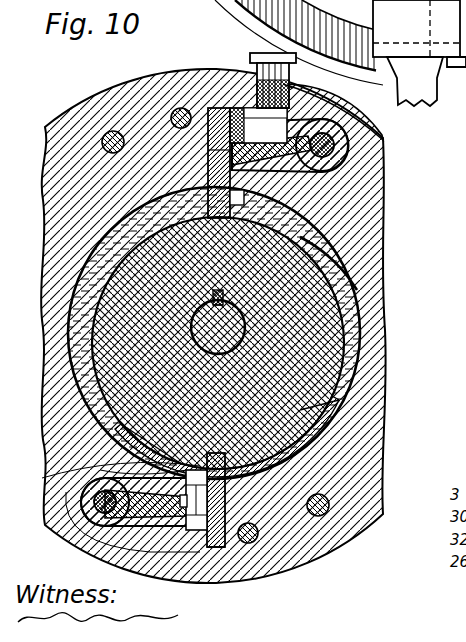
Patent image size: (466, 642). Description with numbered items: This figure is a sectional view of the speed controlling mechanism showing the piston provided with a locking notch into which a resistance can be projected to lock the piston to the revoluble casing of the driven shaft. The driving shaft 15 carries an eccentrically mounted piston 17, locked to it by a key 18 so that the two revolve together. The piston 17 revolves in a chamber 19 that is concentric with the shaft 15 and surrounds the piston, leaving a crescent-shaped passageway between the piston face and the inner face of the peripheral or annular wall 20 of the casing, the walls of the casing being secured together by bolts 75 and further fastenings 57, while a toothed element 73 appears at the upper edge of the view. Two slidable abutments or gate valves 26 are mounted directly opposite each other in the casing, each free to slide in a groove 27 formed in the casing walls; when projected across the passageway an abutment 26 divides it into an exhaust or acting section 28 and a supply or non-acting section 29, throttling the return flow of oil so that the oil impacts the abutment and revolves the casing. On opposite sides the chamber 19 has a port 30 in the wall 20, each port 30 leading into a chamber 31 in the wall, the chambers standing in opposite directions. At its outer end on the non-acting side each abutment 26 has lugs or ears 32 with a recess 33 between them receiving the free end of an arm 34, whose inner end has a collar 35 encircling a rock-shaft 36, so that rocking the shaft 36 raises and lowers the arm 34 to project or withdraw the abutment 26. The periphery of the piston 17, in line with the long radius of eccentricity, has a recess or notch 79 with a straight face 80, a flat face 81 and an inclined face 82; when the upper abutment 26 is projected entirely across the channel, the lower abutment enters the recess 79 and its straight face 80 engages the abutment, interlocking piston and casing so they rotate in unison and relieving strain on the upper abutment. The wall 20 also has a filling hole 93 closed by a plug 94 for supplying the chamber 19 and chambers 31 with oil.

The shaft 15 is at (230, 326).
The piston 17 is at (223, 299).
The key 18 is at (223, 305).
The chamber 19 is at (212, 343).
The peripheral or annular wall 20 is at (55, 213).
The slidable abutment or gate valve 26 is at (207, 202).
The groove 27 is at (228, 560).
The exhaust or acting section 28 is at (214, 333).
The supply or non-acting section 29 is at (320, 253).
The port or passage 30 is at (246, 200).
The chamber 31 is at (210, 326).
The lugs or ears 32 is at (259, 123).
The recess 33 is at (208, 155).
The arm 34 is at (208, 318).
The collar 35 is at (318, 104).
The rock-shaft 36 is at (334, 146).
The bolt 57 is at (107, 137).
The gear 73 is at (340, 53).
The bolts 75 is at (179, 108).
The recess or notch 79 is at (187, 470).
The straight face 80 is at (270, 448).
The flat face 81 is at (300, 410).
The inclined face 82 is at (180, 463).
The filling hole 93 is at (293, 88).
The plug 94 is at (252, 62).